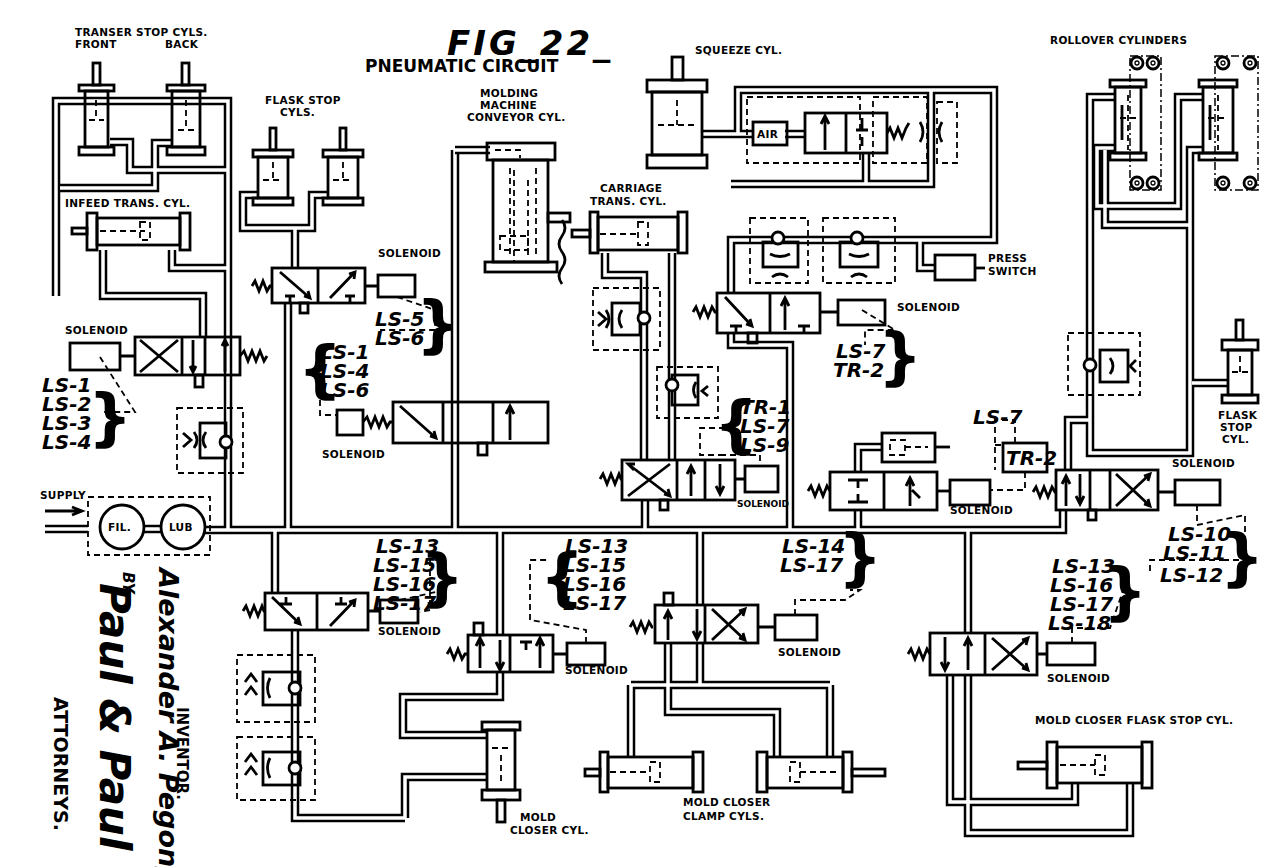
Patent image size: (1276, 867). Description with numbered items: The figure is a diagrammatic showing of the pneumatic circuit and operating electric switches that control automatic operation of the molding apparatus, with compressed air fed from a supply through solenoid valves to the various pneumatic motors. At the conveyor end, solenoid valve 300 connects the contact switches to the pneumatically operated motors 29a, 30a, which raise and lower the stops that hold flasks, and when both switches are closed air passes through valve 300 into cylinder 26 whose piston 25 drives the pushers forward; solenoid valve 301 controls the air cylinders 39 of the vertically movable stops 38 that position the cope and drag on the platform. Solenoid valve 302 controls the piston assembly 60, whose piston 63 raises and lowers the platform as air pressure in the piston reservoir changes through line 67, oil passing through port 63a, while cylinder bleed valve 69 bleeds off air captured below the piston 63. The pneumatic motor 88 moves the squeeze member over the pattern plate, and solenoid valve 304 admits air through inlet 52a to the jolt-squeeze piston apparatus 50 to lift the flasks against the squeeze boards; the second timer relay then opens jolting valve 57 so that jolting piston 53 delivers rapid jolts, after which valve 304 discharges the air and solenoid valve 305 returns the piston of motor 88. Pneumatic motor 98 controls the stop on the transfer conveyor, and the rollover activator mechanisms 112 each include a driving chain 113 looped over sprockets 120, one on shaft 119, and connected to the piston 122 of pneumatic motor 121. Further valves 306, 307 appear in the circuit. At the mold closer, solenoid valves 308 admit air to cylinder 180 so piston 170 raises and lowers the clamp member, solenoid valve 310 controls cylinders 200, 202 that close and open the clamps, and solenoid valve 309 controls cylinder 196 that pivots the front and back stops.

The infeed transfer cylinder piston rod 25 is at (78, 236).
The cylinder 26 is at (160, 232).
The pneumatically operated motor 29a is at (108, 106).
The pneumatically operated motor 30a is at (162, 95).
The vertically movable stops 38 is at (276, 135).
The air cylinders 39 is at (282, 165).
The jolt-squeeze piston apparatus 50 is at (645, 101).
The inlet 52a is at (725, 126).
The jolting piston 53 is at (915, 433).
The jolting valve 57 is at (955, 480).
The piston assembly 60 is at (556, 195).
The piston 63 is at (500, 196).
The port 63a is at (520, 262).
The line 67 is at (480, 148).
The cylinder bleed valve 69 is at (564, 263).
The pneumatic motor 88 is at (660, 228).
The pneumatic motor 98 is at (1218, 355).
The rollover activator mechanisms 112 is at (1102, 88).
The driving chain 113 is at (1130, 167).
The shaft 119 is at (1131, 63).
The sprockets 120 is at (1135, 68).
The pneumatic motor 121 is at (1125, 134).
The piston 122 is at (1125, 119).
The piston 170 is at (497, 812).
The cylinder 180 is at (518, 738).
The cylinder 196 is at (1125, 765).
The cylinder 200 is at (830, 790).
The cylinder 202 is at (670, 790).
The solenoid valve 300 is at (175, 337).
The solenoid valve 301 is at (345, 268).
The solenoid valve 302 is at (478, 412).
The solenoid valve 304 is at (735, 305).
The solenoid valve 305 is at (700, 500).
The solenoid valve 306 is at (905, 512).
The solenoid valve 307 is at (1115, 512).
The solenoid valves 308 is at (350, 630).
The solenoid valve 309 is at (992, 633).
The solenoid valve 310 is at (740, 645).